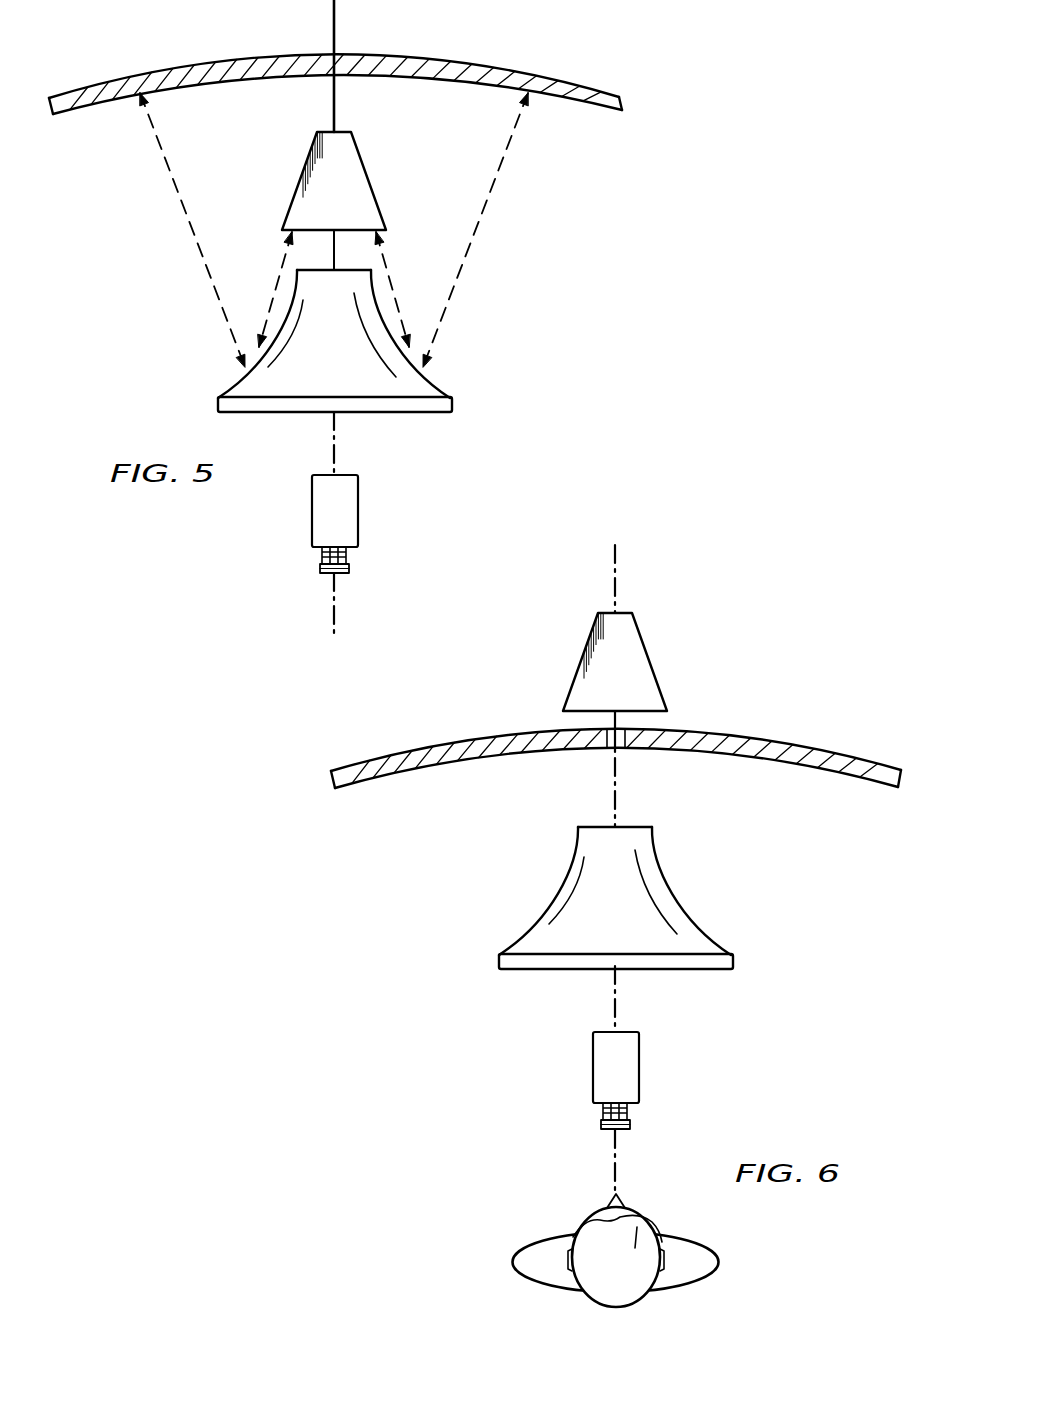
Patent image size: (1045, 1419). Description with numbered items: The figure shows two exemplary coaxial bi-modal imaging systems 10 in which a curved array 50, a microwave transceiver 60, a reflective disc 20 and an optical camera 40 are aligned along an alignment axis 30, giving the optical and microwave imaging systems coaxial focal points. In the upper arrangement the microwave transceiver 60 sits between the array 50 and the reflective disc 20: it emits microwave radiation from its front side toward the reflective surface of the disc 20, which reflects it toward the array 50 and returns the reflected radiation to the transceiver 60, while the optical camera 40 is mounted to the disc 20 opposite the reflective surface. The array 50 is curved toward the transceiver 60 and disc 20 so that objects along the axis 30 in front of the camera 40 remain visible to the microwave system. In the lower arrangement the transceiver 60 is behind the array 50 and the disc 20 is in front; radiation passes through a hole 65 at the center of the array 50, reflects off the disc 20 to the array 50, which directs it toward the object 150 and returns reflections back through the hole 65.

In FIG. 5, the coaxial bi-modal imaging system 10 is at (550, 300).
In FIG. 6, the coaxial bi-modal imaging system 10 is at (830, 972).
In FIG. 5, the reflective disc 20 is at (415, 412).
In FIG. 6, the reflective disc 20 is at (698, 968).
In FIG. 5, the alignment axis 30 is at (334, 626).
In FIG. 6, the alignment axis 30 is at (619, 562).
In FIG. 5, the optical camera 40 is at (312, 516).
In FIG. 6, the optical camera 40 is at (593, 1069).
In FIG. 5, the curved array 50 is at (200, 63).
In FIG. 6, the curved array 50 is at (776, 739).
In FIG. 5, the microwave transceiver 60 is at (371, 180).
In FIG. 6, the microwave transceiver 60 is at (652, 661).
In FIG. 6, the hole 65 is at (620, 750).
In FIG. 6, the object 150 is at (718, 1263).